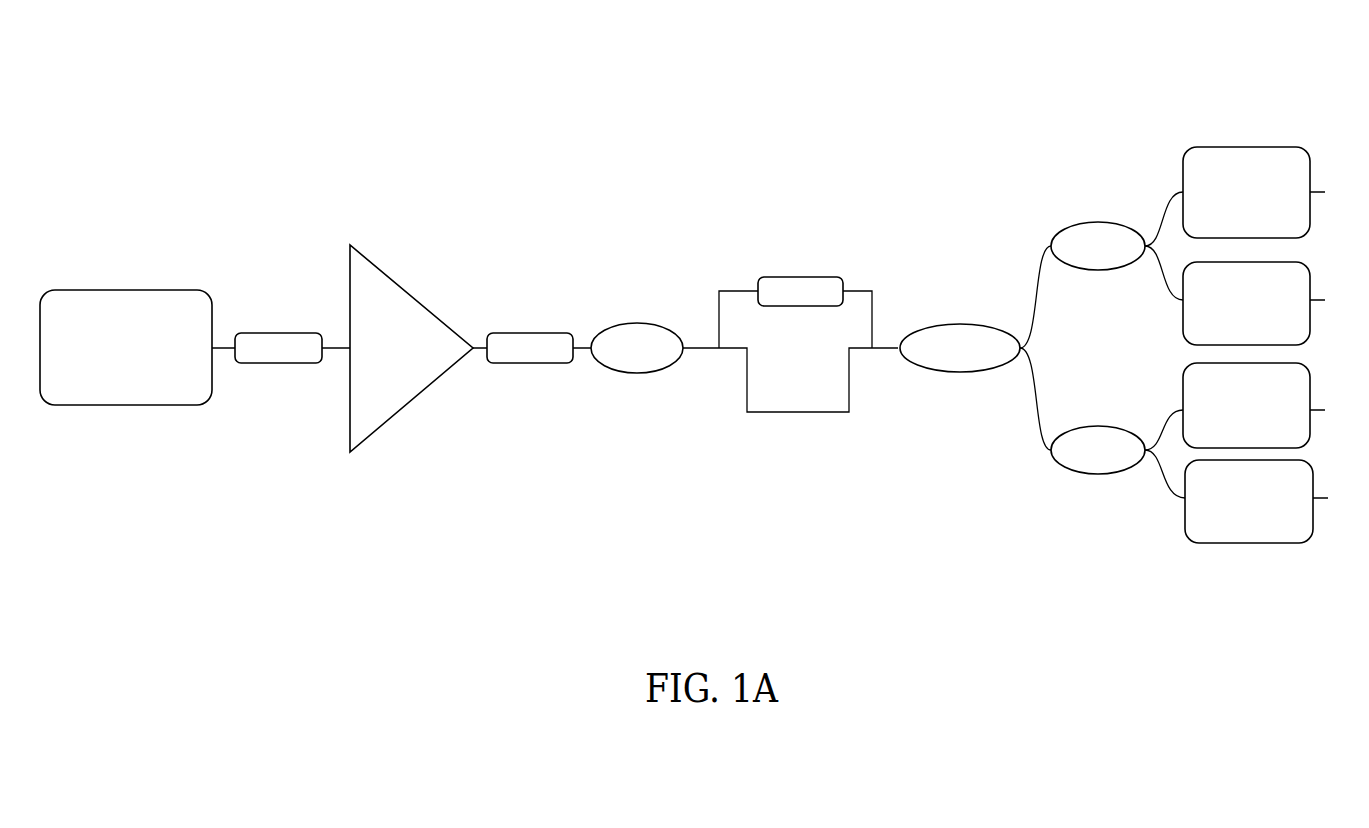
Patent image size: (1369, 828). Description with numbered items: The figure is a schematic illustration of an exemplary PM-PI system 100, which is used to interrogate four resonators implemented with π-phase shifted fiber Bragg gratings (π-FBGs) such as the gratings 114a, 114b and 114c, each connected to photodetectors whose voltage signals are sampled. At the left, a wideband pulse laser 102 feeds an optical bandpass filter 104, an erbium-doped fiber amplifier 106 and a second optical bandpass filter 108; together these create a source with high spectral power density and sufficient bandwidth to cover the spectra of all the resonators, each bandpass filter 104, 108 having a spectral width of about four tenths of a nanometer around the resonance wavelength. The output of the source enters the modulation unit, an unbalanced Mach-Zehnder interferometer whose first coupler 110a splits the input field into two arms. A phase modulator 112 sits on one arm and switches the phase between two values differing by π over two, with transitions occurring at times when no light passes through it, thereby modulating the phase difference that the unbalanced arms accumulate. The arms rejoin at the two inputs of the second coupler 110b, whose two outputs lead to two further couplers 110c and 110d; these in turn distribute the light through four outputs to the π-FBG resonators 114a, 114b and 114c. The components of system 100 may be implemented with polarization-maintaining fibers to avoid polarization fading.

The PM-PI system 100 is at (868, 92).
The wideband pulse laser 102 is at (152, 290).
The optical bandpass filter 104 is at (255, 333).
The erbium-doped fiber amplifier 106 is at (408, 290).
The optical bandpass filter 108 is at (540, 333).
The first coupler 110a is at (650, 323).
The second coupler 110b is at (952, 323).
The fiber coupler 110c is at (1115, 222).
The fiber coupler 110d is at (1112, 425).
The phase modulator 112 is at (800, 277).
The π-phase shifted fiber Bragg grating 114a is at (1246, 192).
The π-phase shifted fiber Bragg grating 114b is at (1246, 303).
The π-phase shifted fiber Bragg grating 114c is at (1248, 453).